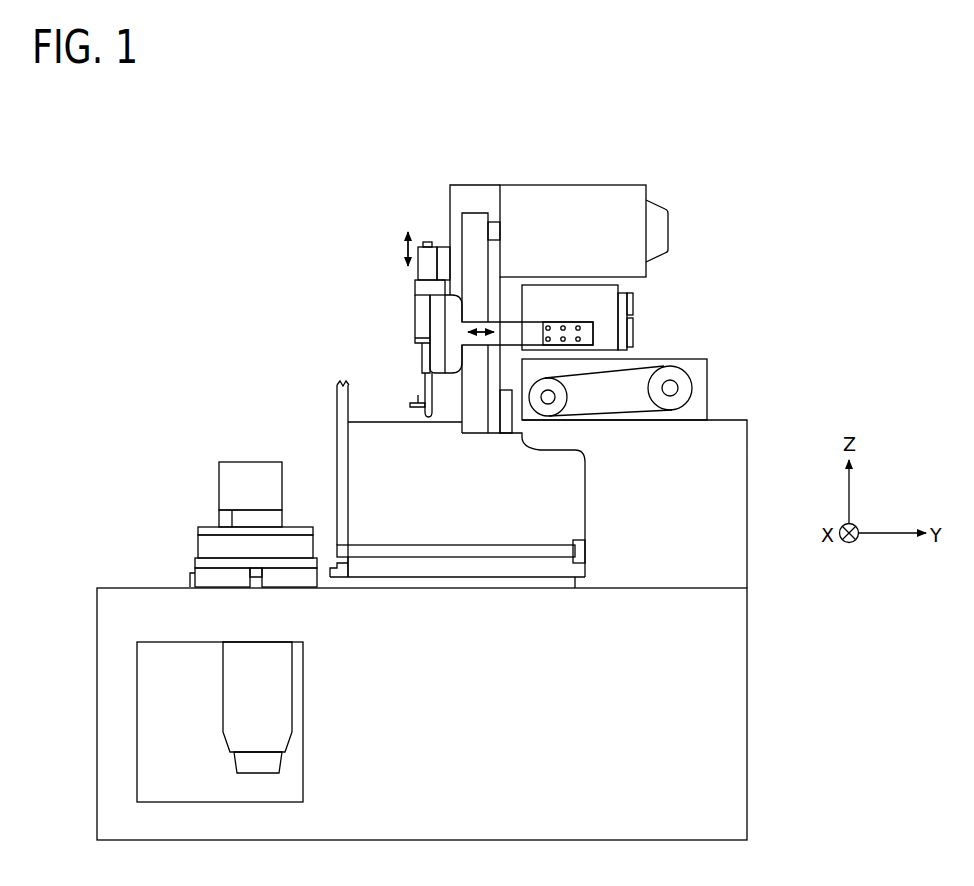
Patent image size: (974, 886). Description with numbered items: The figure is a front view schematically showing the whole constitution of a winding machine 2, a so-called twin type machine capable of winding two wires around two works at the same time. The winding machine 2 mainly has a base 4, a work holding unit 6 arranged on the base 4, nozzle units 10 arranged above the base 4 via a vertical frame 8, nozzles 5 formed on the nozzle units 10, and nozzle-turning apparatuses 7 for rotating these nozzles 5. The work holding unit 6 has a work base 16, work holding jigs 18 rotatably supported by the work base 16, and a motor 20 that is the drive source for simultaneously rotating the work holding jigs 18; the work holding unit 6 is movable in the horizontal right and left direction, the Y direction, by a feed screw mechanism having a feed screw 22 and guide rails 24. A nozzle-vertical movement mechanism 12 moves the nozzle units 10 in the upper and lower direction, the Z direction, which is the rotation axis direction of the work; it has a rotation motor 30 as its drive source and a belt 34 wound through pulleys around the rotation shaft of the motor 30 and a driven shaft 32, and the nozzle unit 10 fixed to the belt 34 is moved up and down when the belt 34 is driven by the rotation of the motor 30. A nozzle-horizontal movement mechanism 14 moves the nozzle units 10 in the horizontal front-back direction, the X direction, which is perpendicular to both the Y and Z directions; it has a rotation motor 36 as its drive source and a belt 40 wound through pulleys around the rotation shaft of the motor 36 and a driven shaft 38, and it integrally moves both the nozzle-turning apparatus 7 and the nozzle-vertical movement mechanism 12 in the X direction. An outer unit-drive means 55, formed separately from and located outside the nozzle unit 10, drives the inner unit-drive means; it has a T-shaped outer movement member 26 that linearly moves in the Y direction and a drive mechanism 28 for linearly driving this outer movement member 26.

The winding machine 2 is at (321, 227).
The base 4 is at (735, 702).
The nozzle 5 is at (418, 399).
The work holding unit 6 is at (192, 523).
The nozzle-turning apparatus 7 is at (402, 332).
The vertical frame 8 is at (737, 483).
The nozzle unit 10 is at (414, 287).
The nozzle-vertical movement mechanism 12 is at (554, 177).
The nozzle-horizontal movement mechanism 14 is at (663, 355).
The work base 16 is at (205, 548).
The work holding jig 18 is at (272, 473).
The motor 20 is at (283, 707).
The feed screw 22 is at (500, 563).
The guide rails 24 is at (427, 580).
The outer movement member 26 is at (507, 325).
The drive mechanism 28 is at (639, 307).
The rotation motor 30 is at (606, 197).
The driven shaft 32 is at (508, 413).
The belt 34 is at (473, 213).
The rotation motor 36 is at (683, 385).
The driven shaft 38 is at (558, 408).
The belt 40 is at (637, 415).
The outer unit-drive means 55 is at (512, 356).